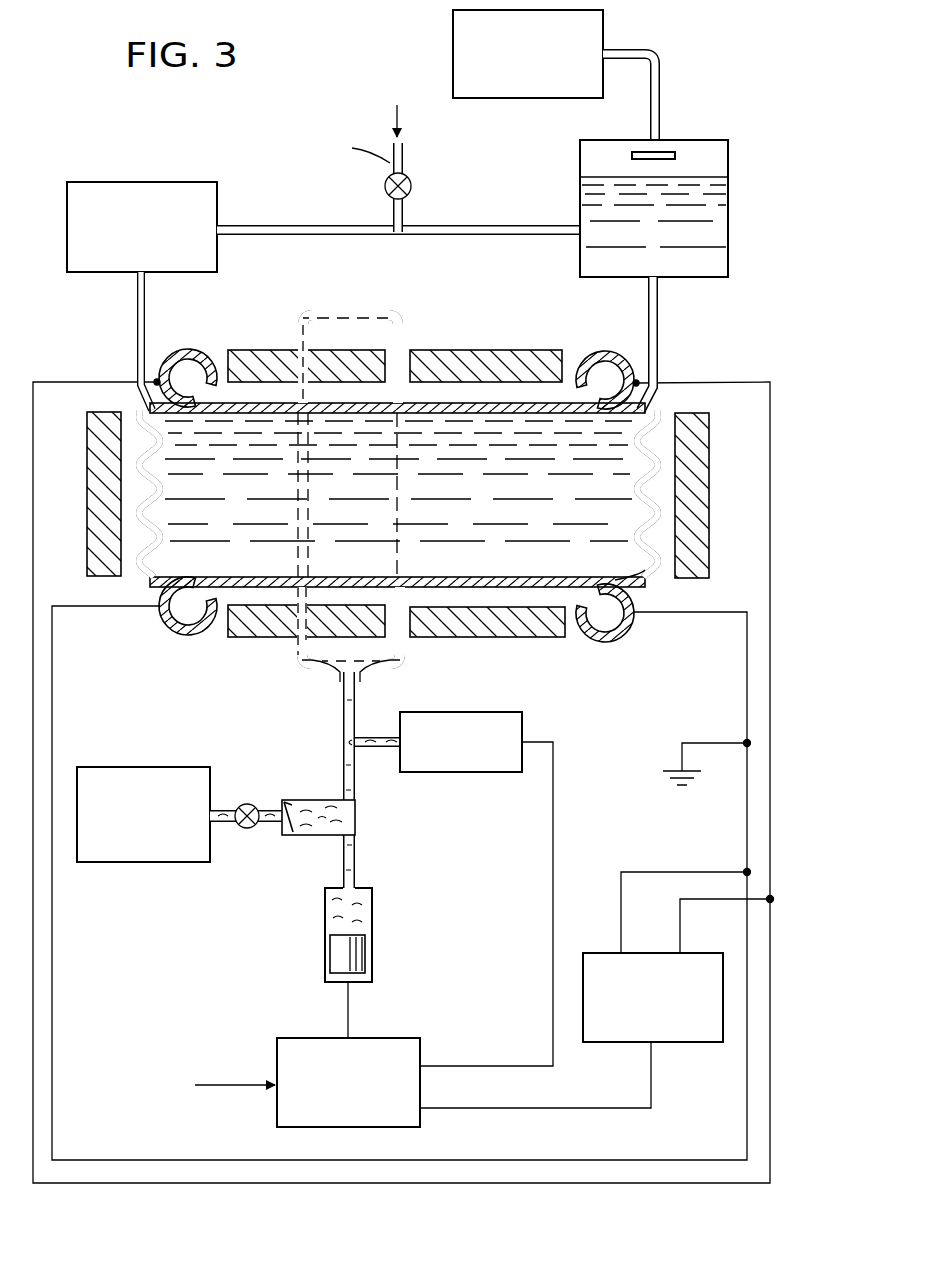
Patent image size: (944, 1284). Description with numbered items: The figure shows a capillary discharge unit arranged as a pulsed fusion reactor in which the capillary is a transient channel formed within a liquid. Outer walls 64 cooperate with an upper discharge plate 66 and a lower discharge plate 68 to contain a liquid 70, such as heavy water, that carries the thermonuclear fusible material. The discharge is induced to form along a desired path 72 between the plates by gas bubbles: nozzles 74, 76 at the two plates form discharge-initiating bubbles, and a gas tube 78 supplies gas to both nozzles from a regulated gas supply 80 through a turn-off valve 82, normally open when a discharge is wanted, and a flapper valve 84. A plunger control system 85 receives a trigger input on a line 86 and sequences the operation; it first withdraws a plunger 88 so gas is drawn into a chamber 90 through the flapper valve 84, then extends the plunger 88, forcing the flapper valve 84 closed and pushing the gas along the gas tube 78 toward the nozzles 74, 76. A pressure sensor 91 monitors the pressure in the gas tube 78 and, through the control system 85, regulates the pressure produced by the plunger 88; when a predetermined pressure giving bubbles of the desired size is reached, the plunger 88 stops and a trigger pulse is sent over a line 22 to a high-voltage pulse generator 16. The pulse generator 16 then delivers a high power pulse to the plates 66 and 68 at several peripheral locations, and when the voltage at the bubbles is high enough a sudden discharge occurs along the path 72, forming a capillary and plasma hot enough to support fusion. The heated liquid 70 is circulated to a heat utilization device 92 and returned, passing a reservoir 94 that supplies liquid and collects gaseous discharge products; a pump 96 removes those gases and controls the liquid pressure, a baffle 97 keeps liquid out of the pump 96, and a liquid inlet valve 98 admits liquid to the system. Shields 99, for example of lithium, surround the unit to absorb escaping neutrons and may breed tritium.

The pulse generator 16 is at (697, 1043).
The line 22 is at (550, 1110).
The outer walls 64 is at (658, 511).
The discharge plate 66 is at (482, 406).
The discharge plate 68 is at (485, 582).
The liquid 70 is at (632, 569).
The path 72 is at (397, 513).
The nozzle 74 is at (395, 412).
The nozzle 76 is at (391, 582).
The gas tube 78 is at (343, 705).
The regulated gas supply 80 is at (153, 767).
The turn-off valve 82 is at (257, 790).
The flapper valve 84 is at (296, 805).
The plunger control system 85 is at (396, 1038).
The line 86 is at (234, 1079).
The plunger 88 is at (365, 952).
The chamber 90 is at (348, 820).
The pressure sensor 91 is at (494, 712).
The heat utilization device 92 is at (160, 182).
The reservoir 94 is at (718, 212).
The pump 96 is at (604, 28).
The baffle 97 is at (668, 147).
The liquid inlet valve 98 is at (412, 186).
The shields 99 is at (272, 354).